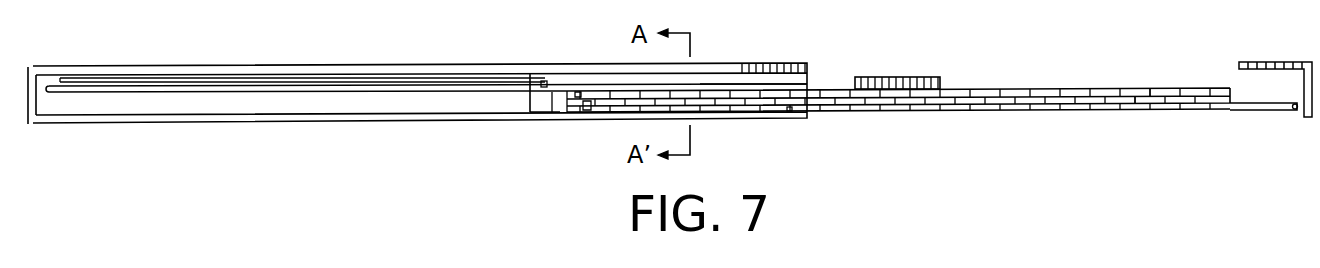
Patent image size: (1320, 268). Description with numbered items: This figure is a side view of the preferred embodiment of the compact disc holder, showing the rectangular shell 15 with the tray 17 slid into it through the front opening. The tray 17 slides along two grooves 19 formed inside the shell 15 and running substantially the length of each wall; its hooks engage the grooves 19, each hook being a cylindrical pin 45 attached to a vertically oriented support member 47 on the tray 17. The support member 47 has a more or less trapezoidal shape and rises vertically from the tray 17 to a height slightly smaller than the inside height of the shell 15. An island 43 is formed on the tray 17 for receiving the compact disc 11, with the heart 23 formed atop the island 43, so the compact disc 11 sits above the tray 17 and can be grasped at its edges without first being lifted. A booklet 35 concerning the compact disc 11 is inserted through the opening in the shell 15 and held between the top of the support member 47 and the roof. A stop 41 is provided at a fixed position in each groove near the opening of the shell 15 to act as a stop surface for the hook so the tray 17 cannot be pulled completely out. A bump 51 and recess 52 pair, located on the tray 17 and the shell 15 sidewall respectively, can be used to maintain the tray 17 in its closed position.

The compact disc 11 is at (1085, 88).
The shell 15 is at (428, 68).
The tray 17 is at (1240, 108).
The grooves 19 is at (313, 87).
The heart 23 is at (940, 77).
The booklet 35 is at (807, 78).
The stop 41 is at (788, 83).
The island 43 is at (1145, 97).
The cylindrical pin 45 is at (548, 78).
The support member 47 is at (553, 112).
The bump 51 is at (1297, 110).
The recess 52 is at (790, 111).